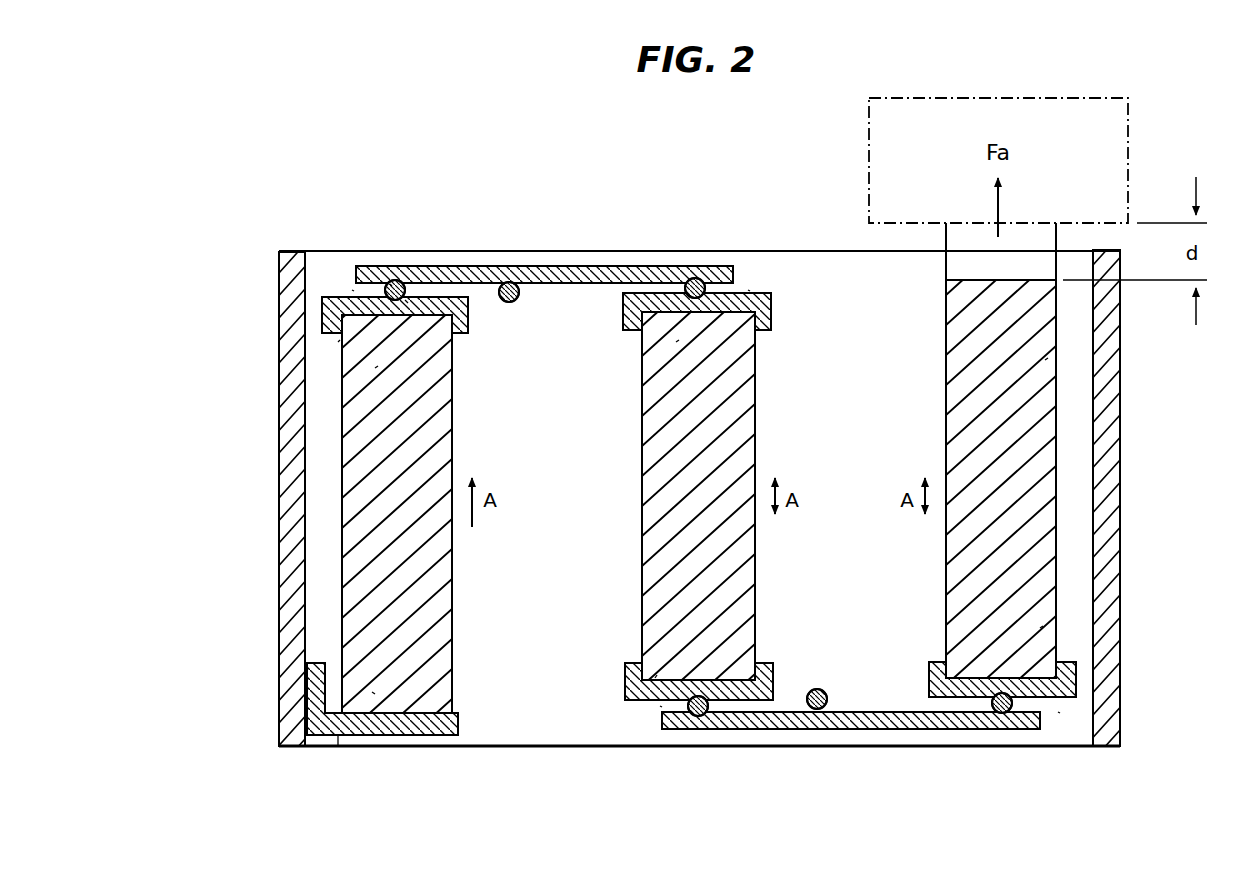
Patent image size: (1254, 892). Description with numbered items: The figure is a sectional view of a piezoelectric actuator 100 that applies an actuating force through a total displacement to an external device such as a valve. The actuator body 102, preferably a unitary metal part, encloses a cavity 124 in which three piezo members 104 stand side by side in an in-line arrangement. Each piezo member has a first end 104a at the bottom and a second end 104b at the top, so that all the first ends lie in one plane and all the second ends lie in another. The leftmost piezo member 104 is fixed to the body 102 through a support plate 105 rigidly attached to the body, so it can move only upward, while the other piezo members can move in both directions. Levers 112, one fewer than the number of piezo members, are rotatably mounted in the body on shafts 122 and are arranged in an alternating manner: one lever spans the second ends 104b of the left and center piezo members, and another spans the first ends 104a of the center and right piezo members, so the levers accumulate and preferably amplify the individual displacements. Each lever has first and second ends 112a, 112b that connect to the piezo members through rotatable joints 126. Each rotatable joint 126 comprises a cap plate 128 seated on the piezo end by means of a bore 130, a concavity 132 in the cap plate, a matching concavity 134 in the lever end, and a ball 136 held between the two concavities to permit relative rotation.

The actuator 100 is at (268, 166).
The actuator body 102 is at (238, 322).
The piezo member 104 is at (340, 488).
The first end 104a is at (372, 692).
The second end 104b is at (375, 368).
The support plate 105 is at (338, 738).
The lever 112 is at (517, 264).
The first end 112a is at (365, 265).
The second end 112b is at (720, 264).
The shaft 122 is at (518, 290).
The cavity 124 is at (562, 510).
The rotatable joint 126 is at (352, 290).
The cap plate 128 is at (468, 320).
The bore 130 is at (338, 342).
The concavity 132 is at (405, 300).
The concavity 134 is at (390, 284).
The ball 136 is at (402, 282).